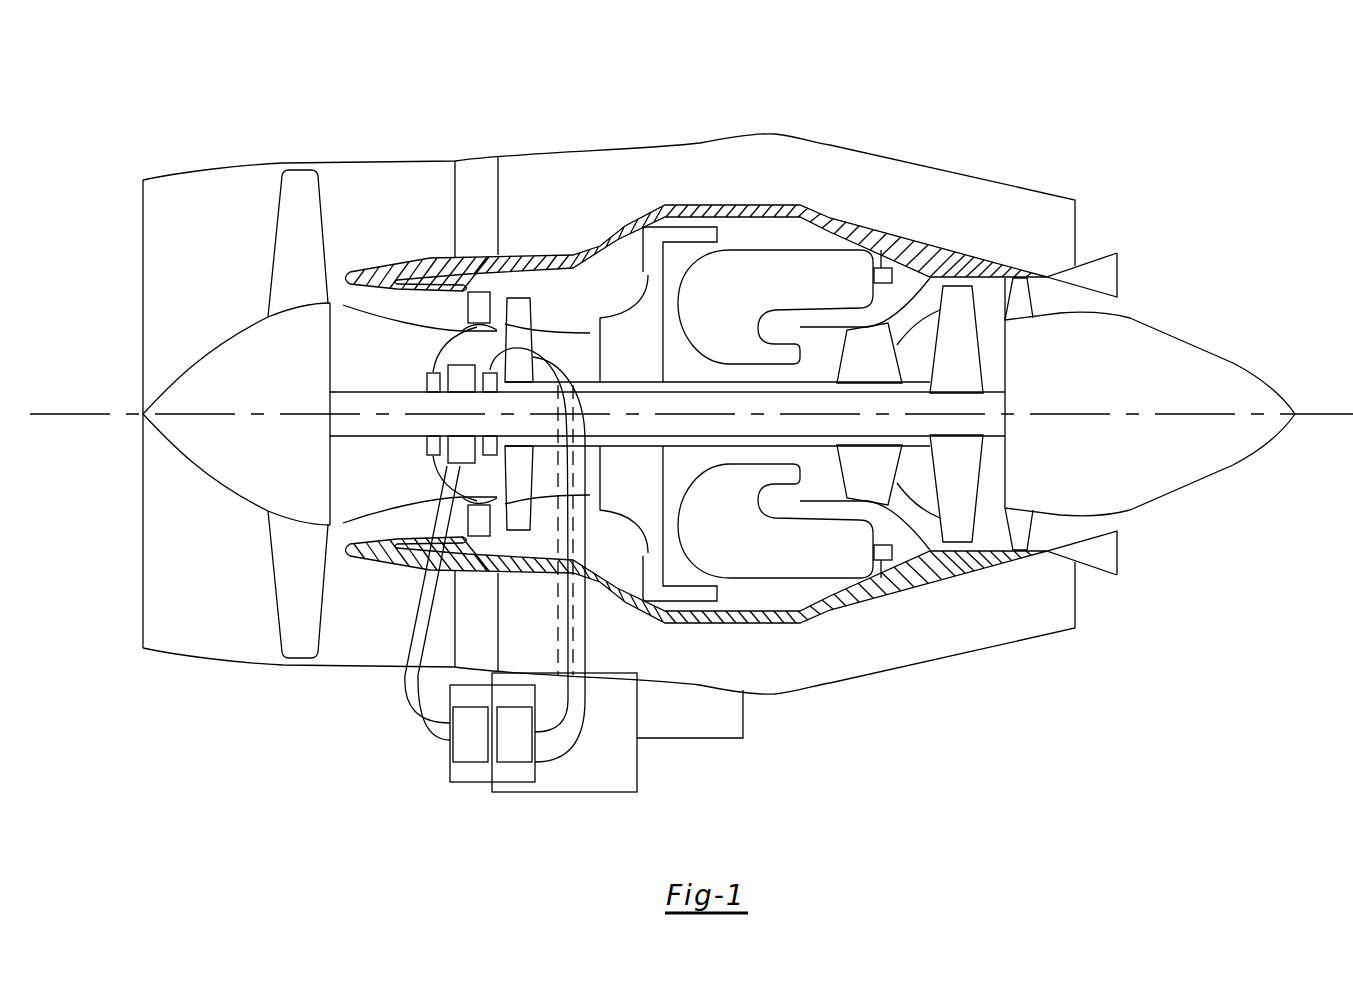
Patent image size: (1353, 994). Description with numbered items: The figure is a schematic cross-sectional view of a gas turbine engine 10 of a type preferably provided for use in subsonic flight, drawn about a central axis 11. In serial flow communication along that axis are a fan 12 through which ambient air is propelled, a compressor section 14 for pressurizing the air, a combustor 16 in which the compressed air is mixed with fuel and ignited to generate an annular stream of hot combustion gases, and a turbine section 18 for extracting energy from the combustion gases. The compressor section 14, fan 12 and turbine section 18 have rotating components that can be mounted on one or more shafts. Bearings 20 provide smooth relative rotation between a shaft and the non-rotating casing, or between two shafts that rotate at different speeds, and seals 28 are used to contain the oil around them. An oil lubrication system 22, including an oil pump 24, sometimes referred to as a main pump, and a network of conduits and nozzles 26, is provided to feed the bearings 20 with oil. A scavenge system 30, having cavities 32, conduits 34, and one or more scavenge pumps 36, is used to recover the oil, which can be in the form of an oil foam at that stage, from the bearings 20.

The gas turbine engine 10 is at (885, 128).
The engine central axis 11 is at (1335, 414).
The fan 12 is at (292, 570).
The compressor section 14 is at (555, 312).
The combustor 16 is at (780, 265).
The turbine section 18 is at (913, 482).
The bearings 20 is at (458, 363).
The oil lubrication system 22 is at (405, 703).
The oil pump 24 is at (465, 753).
The network of conduits and nozzles 26 is at (390, 667).
The seals 28 is at (432, 374).
The scavenge system 30 is at (585, 703).
The cavities 32 is at (480, 292).
The conduits 34 is at (563, 753).
The scavenge pumps 36 is at (510, 755).